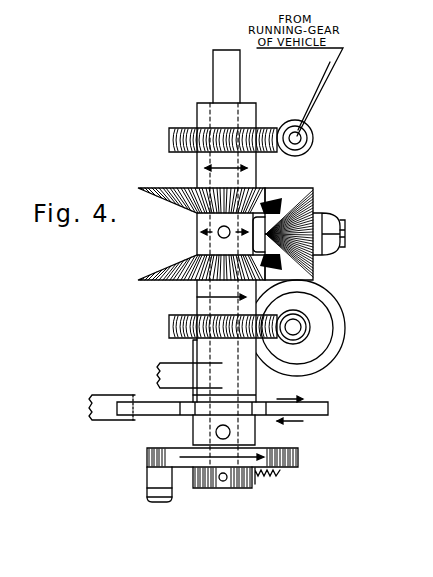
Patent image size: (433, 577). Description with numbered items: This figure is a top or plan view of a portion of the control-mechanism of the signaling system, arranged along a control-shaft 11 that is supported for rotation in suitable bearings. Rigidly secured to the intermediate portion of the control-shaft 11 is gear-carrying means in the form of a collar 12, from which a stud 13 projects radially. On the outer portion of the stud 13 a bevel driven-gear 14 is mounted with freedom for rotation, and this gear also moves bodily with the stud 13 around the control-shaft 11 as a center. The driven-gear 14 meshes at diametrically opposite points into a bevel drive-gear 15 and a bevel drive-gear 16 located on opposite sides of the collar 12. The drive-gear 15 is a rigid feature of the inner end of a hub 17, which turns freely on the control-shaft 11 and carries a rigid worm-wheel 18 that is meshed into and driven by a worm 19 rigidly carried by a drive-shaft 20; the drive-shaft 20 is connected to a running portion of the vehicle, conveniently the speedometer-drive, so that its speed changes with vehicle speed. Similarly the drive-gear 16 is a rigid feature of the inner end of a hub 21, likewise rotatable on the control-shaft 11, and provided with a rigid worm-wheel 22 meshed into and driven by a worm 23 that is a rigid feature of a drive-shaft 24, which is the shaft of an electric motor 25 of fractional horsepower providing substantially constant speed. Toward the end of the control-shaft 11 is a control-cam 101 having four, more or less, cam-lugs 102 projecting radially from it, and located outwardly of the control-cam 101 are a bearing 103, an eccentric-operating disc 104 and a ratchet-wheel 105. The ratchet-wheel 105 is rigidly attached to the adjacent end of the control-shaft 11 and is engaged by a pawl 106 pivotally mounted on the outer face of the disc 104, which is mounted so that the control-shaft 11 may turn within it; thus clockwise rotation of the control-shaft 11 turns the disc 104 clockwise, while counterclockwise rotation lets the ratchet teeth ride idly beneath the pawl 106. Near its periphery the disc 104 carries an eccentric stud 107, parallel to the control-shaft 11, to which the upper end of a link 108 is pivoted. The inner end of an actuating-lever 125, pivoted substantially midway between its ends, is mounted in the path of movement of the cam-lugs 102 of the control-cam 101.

The control-shaft 11 is at (237, 69).
The hub 17 is at (198, 112).
The worm-wheel 18 is at (171, 140).
The worm 19 is at (298, 120).
The drive-shaft 20 is at (306, 138).
The bevel drive-gear 15 is at (160, 188).
The bevel drive-gear 16 is at (163, 281).
The collar 12 is at (196, 228).
The stud 13 is at (341, 242).
The bevel driven-gear 14 is at (312, 265).
The hub 21 is at (197, 296).
The worm-wheel 22 is at (170, 327).
The worm 23 is at (301, 313).
The drive-shaft 24 is at (292, 331).
The electric motor 25 is at (320, 364).
The bearing 103 is at (192, 351).
The cam-lugs 102 is at (148, 402).
The actuating-lever 125 is at (105, 402).
The control-cam 101 is at (190, 413).
The eccentric-operating disc 104 is at (147, 457).
The eccentric stud 107 is at (147, 477).
The link 108 is at (147, 497).
The ratchet-wheel 105 is at (222, 490).
The pawl 106 is at (259, 484).